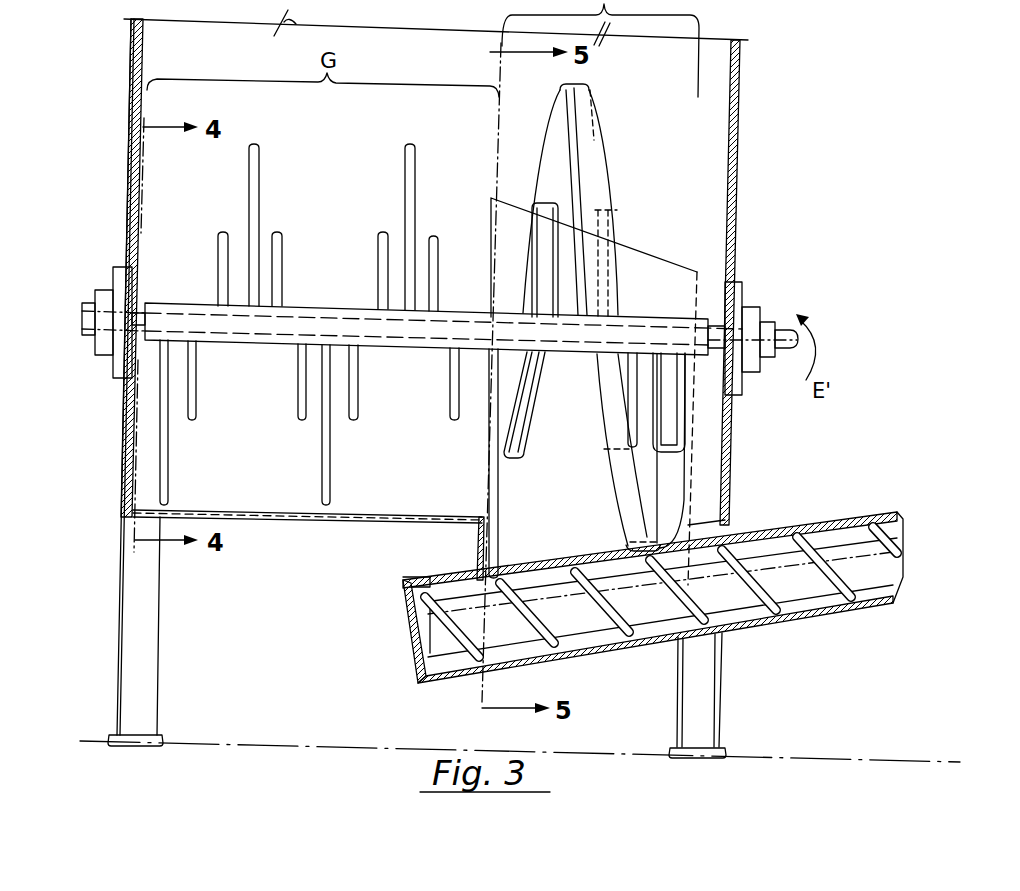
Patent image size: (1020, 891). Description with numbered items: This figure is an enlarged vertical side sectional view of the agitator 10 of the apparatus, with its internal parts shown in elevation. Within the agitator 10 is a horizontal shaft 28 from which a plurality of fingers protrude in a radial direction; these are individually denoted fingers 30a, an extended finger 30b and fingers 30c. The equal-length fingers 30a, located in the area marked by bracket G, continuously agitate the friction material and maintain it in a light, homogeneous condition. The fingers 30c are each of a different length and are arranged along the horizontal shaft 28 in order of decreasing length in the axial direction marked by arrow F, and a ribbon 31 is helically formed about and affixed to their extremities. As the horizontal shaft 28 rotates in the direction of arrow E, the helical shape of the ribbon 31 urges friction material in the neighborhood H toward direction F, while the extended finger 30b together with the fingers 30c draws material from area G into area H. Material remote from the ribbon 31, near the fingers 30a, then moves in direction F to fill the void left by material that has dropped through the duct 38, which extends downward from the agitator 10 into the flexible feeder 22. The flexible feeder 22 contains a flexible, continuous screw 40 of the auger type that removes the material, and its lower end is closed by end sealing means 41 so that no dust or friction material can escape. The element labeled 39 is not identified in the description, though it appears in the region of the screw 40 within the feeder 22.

The agitator 10 is at (747, 125).
The flexible feeder 22 is at (851, 511).
The horizontal shaft 28 is at (243, 340).
The fingers 30a is at (221, 239).
The extended finger 30b is at (500, 500).
The fingers 30c is at (627, 410).
The ribbon 31 is at (603, 176).
The duct 38 is at (477, 547).
The screw conveyor 39 is at (559, 556).
The flexible, continuous screw 40 is at (793, 583).
The end sealing means 41 is at (405, 608).